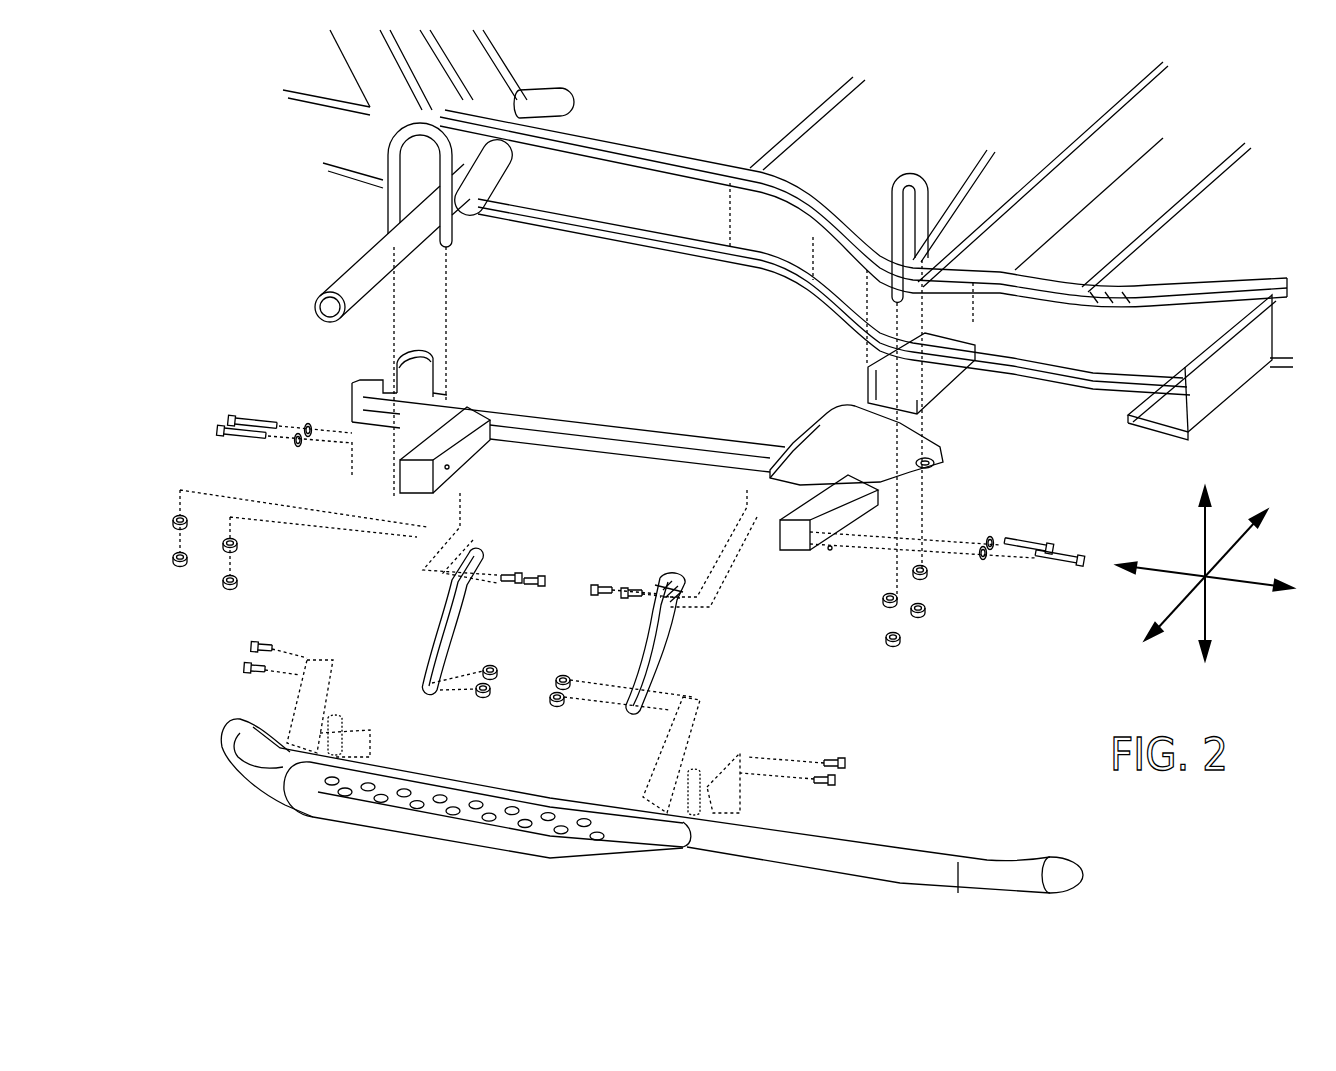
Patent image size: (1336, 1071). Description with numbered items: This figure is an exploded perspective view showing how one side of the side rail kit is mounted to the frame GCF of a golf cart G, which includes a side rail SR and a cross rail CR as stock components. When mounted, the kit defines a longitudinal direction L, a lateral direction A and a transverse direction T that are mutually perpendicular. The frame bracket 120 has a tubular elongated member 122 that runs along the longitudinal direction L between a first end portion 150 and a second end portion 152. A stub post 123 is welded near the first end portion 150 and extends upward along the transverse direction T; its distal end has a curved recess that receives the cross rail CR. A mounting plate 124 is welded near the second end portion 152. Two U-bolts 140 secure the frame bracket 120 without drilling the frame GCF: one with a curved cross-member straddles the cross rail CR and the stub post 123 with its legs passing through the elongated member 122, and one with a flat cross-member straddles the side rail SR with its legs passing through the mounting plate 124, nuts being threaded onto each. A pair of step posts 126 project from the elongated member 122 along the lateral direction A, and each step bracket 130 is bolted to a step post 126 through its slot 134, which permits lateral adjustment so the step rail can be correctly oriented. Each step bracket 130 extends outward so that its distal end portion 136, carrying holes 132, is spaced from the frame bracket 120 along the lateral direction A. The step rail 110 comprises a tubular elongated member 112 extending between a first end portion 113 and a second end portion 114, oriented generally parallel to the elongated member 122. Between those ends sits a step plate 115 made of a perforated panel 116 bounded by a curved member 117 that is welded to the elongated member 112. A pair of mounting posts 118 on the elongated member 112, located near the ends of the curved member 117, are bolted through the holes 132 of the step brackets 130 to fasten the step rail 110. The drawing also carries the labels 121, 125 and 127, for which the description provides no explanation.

The step rail 110 is at (631, 837).
The elongated member 112 is at (750, 850).
The first end portion 113 is at (215, 756).
The second end portion 114 is at (1066, 900).
The step plate 115 is at (302, 813).
The perforated panel 116 is at (496, 858).
The curved member 117 is at (460, 835).
The mounting posts 118 is at (332, 716).
The frame bracket 120 is at (360, 407).
The seat surface 121 is at (447, 391).
The elongated member 122 is at (593, 423).
The stub post 123 is at (445, 361).
The mounting plate 124 is at (825, 440).
The washer 125 is at (928, 466).
The step posts 126 is at (467, 447).
The aperture 127 is at (449, 469).
The step brackets 130 is at (455, 622).
The holes 132 is at (628, 690).
The slot 134 is at (666, 596).
The distal end portion 136 is at (433, 695).
The U-bolts 140 is at (394, 203).
The first end portion 150 is at (629, 486).
The second end portion 152 is at (937, 425).
The frame GCF is at (642, 150).
The side rail SR is at (668, 197).
The cross rail CR is at (328, 307).
The golf cart G is at (1208, 122).
The transverse direction T is at (1203, 538).
The lateral direction A is at (1180, 605).
The longitudinal direction L is at (1243, 585).